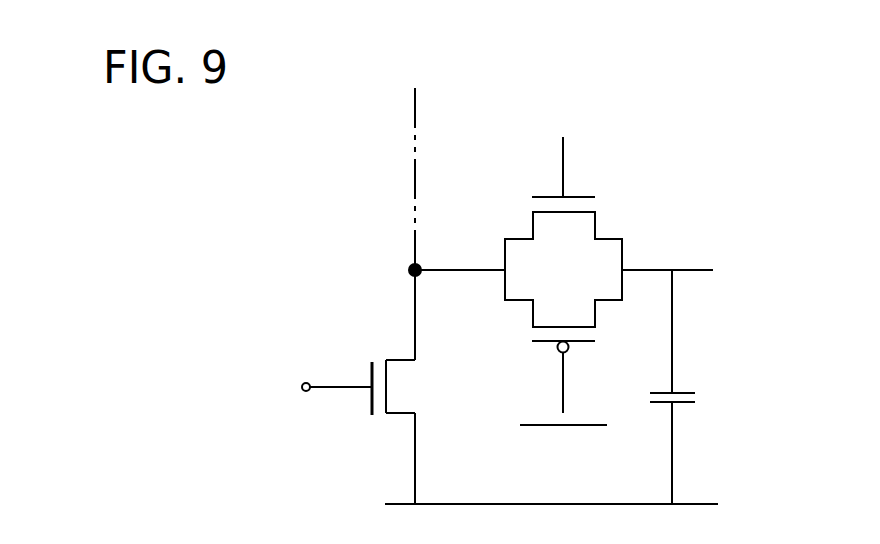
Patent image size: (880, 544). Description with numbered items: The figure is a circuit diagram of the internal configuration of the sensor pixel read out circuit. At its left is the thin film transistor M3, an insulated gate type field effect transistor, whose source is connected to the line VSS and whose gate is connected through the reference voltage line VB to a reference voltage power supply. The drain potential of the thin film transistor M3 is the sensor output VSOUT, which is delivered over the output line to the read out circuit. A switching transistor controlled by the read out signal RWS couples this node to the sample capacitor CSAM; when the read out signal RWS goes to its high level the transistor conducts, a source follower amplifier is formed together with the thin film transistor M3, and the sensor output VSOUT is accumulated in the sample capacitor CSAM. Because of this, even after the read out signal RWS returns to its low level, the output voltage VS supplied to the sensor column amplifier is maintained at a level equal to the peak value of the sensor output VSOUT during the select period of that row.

The read out signal RWS is at (563, 282).
The sensor output VSOUT is at (452, 315).
The output voltage VS is at (667, 249).
The sample capacitor CSAM is at (691, 387).
The thin film transistor M3 is at (407, 387).
The reference voltage line VB is at (322, 387).
The line VSS is at (530, 505).